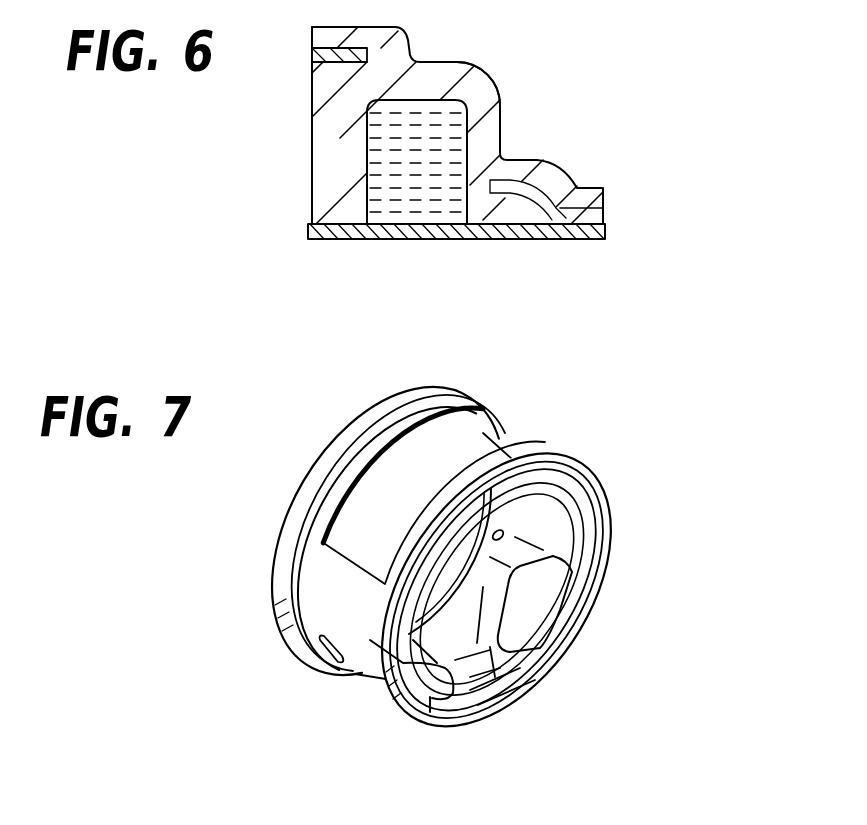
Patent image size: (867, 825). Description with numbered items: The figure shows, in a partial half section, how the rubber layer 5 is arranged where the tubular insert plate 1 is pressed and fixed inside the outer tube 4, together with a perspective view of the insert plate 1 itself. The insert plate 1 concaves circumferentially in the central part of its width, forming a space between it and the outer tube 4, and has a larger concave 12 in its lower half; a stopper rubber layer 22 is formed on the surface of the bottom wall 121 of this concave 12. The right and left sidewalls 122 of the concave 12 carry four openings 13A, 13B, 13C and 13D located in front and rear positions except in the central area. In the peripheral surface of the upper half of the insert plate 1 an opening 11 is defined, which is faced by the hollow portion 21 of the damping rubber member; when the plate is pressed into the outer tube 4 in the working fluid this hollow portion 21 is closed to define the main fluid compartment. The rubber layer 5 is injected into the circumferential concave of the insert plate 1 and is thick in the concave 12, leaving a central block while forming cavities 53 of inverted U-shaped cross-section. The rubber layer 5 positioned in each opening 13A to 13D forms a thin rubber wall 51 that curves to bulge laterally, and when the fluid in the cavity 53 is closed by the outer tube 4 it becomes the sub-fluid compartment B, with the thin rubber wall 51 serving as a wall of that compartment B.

In FIG. 7, the insert plate 1 is at (313, 482).
In FIG. 7, the opening 11 is at (377, 487).
In FIG. 7, the concave 12 is at (465, 743).
In FIG. 6, the bottom wall 121 is at (335, 64).
In FIG. 7, the bottom wall 121 is at (387, 692).
In FIG. 7, the sidewalls 122 is at (492, 680).
In FIG. 6, the opening 13A is at (447, 127).
In FIG. 7, the opening 13A is at (525, 623).
In FIG. 7, the opening 13B is at (430, 697).
In FIG. 7, the opening 13C is at (508, 533).
In FIG. 7, the opening 13D is at (335, 664).
In FIG. 7, the hollow portion 21 is at (485, 673).
In FIG. 6, the stopper rubber layer 22 is at (337, 32).
In FIG. 6, the outer tube 4 is at (417, 232).
In FIG. 6, the rubber layer 5 is at (333, 186).
In FIG. 6, the thin rubber wall 51 is at (480, 90).
In FIG. 6, the cavity 53 is at (466, 213).
In FIG. 6, the sub-fluid compartment B is at (390, 190).